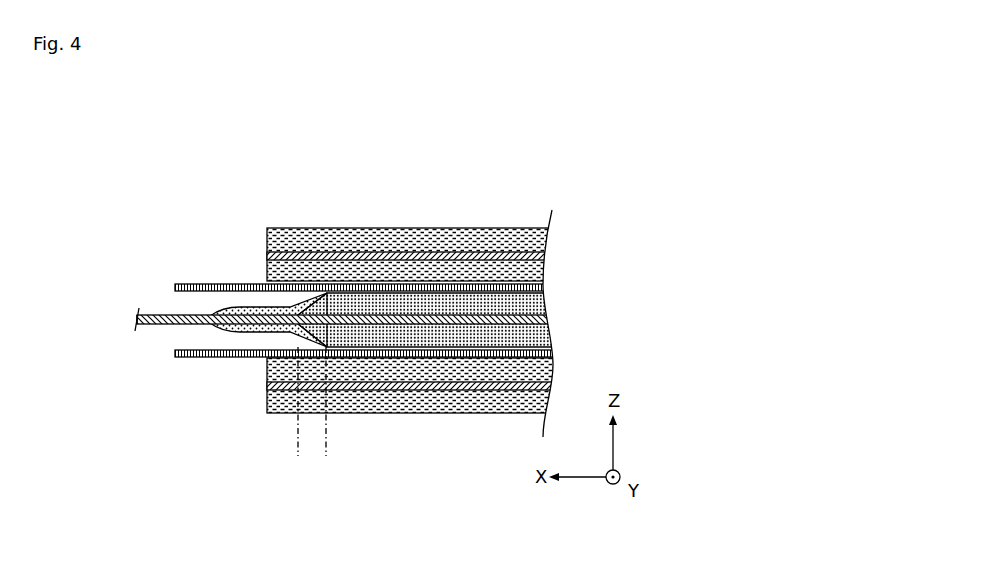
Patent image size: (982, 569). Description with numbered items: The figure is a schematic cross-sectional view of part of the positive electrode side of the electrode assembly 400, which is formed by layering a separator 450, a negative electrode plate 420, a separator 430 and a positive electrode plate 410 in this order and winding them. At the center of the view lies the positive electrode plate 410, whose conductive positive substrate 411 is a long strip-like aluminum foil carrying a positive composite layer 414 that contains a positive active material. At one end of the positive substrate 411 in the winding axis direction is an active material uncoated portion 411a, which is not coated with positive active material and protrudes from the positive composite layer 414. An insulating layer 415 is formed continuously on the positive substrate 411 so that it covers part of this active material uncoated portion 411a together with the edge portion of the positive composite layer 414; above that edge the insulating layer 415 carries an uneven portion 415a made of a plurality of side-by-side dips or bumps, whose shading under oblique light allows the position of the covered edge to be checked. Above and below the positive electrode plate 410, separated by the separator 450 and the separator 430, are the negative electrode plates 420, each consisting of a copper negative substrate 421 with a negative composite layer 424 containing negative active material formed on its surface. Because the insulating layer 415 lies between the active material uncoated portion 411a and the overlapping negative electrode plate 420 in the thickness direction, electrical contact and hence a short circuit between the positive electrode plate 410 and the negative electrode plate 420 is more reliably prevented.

The electrode assembly 400 is at (256, 142).
The positive electrode plate 410 is at (420, 170).
The positive substrate 411 is at (351, 318).
The active material uncoated portion 411a is at (160, 314).
The positive composite layer 414 is at (422, 337).
The insulating layer 415 is at (277, 328).
The uneven portion 415a is at (326, 458).
The negative electrode plate 420 is at (548, 170).
The negative substrate 421 is at (450, 253).
The negative composite layer 424 is at (533, 272).
The separator 430 is at (210, 358).
The separator 450 is at (210, 283).